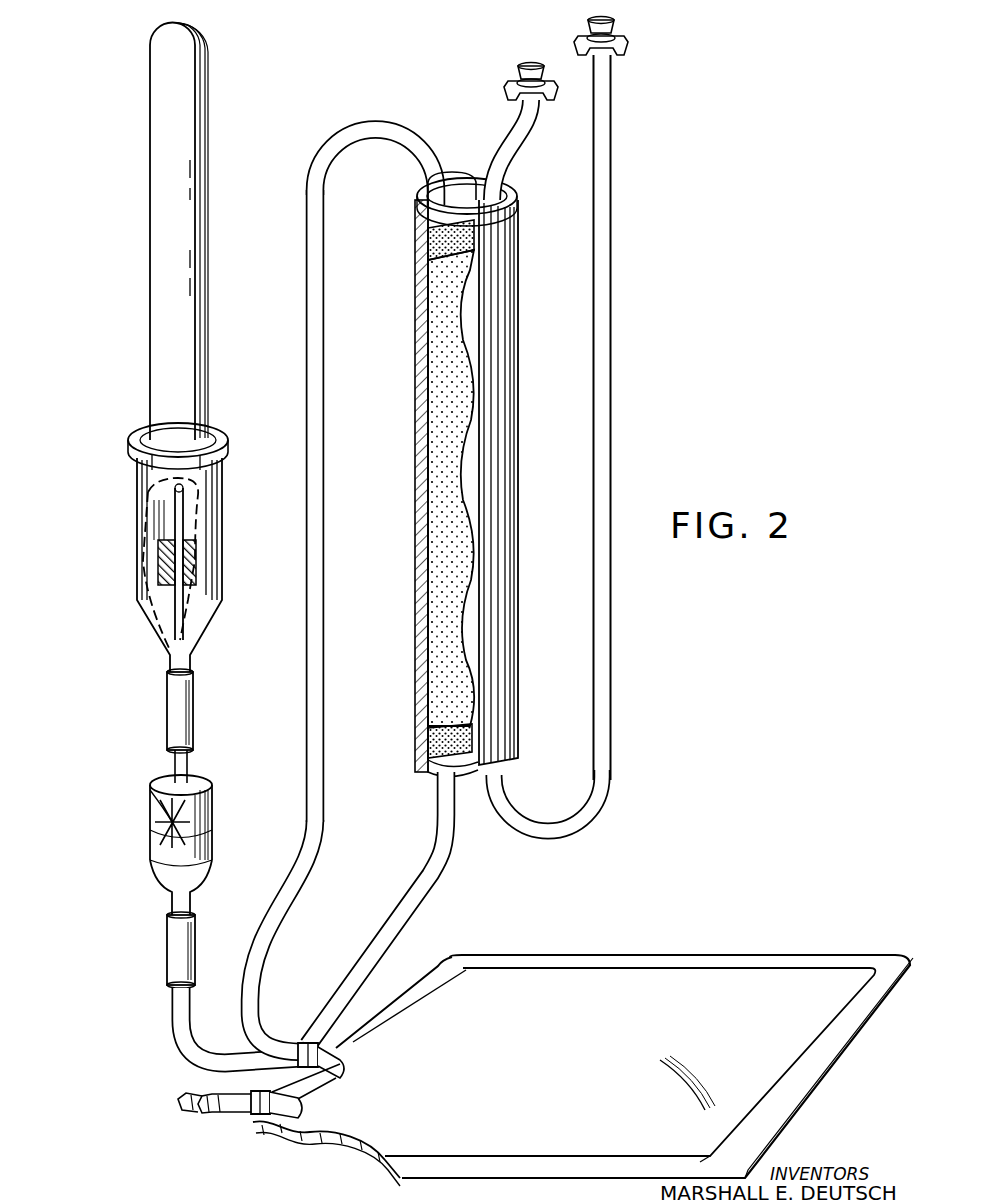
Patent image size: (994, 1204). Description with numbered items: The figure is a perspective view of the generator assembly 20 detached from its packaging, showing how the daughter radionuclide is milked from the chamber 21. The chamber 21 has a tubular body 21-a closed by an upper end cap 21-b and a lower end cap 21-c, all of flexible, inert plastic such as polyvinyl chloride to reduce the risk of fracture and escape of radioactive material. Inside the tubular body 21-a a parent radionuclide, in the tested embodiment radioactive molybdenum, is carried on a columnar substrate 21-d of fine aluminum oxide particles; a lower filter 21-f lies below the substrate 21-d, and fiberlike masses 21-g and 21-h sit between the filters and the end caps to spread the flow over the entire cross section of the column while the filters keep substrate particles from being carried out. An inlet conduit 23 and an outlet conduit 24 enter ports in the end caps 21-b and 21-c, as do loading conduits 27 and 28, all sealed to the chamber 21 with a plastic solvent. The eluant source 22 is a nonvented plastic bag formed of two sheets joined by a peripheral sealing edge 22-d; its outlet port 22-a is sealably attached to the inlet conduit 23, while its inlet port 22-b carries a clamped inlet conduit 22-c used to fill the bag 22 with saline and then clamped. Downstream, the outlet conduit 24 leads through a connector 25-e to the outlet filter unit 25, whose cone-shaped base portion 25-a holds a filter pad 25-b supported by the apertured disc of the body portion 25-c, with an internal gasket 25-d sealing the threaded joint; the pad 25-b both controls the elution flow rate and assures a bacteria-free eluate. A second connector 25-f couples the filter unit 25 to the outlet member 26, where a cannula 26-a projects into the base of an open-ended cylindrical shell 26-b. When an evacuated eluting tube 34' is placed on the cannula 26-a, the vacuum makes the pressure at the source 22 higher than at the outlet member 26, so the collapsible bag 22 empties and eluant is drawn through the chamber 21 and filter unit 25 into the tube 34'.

The generator assembly 20 is at (700, 115).
The chamber 21 is at (568, 482).
The tubular body 21-a is at (422, 325).
The upper end cap 21-b is at (418, 118).
The lower end cap 21-c is at (440, 255).
The columnar substrate 21-d is at (440, 380).
The lower filter 21-f is at (432, 720).
The upper fiberlike mass 21-g is at (440, 240).
The lower fiberlike mass 21-h is at (440, 740).
The source of eluant 22 is at (652, 962).
The outlet port 22-a is at (338, 1040).
The inlet port 22-b is at (268, 1112).
The clamped inlet conduit 22-c is at (222, 1110).
The peripheral sealing edge 22-d is at (740, 965).
The inlet conduit 23 is at (312, 882).
The outlet conduit 24 is at (195, 1040).
The outlet filter unit 25 is at (208, 808).
The cone-shaped base portion 25-a is at (165, 878).
The filter pad 25-b is at (182, 832).
The internally apertured body portion 25-c is at (148, 800).
The internal gasket 25-d is at (165, 840).
The connector 25-e is at (180, 704).
The connector 25-f is at (172, 950).
The outlet member 26 is at (232, 558).
The cannula 26-a is at (150, 568).
The cylindrical shell 26-b is at (210, 496).
The loading conduit 27 is at (522, 128).
The loading conduit 28 is at (602, 141).
The eluting tube 34' is at (218, 231).